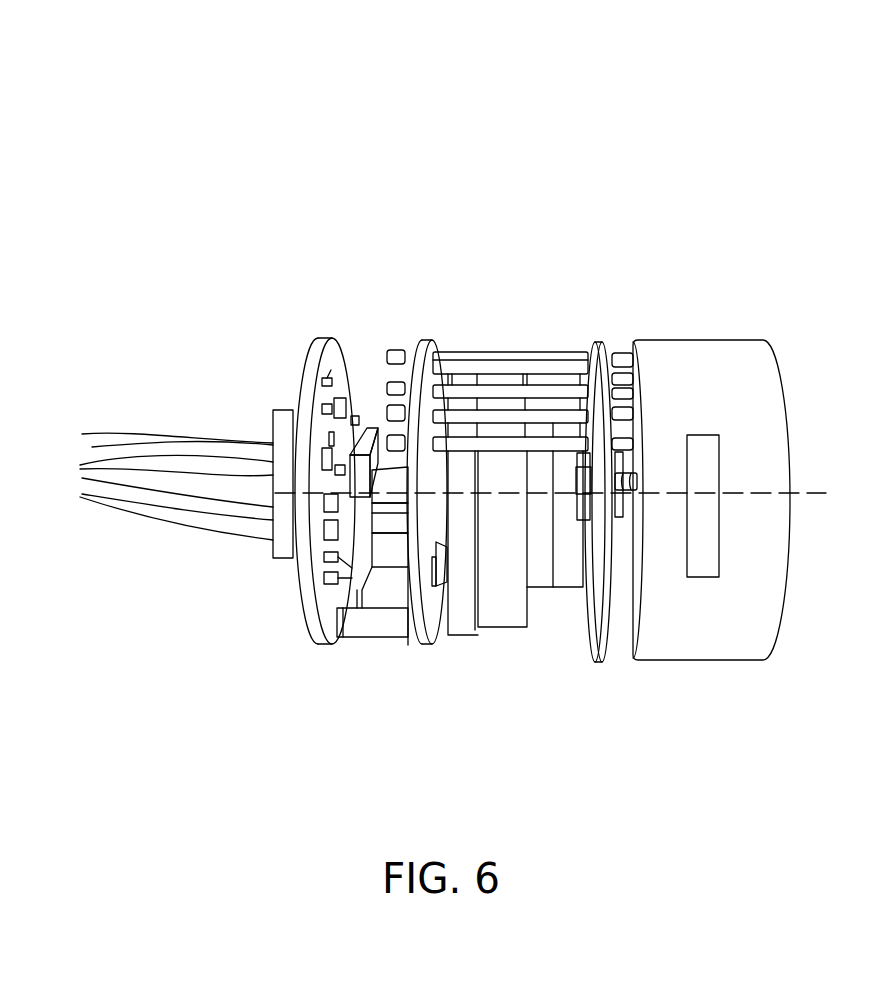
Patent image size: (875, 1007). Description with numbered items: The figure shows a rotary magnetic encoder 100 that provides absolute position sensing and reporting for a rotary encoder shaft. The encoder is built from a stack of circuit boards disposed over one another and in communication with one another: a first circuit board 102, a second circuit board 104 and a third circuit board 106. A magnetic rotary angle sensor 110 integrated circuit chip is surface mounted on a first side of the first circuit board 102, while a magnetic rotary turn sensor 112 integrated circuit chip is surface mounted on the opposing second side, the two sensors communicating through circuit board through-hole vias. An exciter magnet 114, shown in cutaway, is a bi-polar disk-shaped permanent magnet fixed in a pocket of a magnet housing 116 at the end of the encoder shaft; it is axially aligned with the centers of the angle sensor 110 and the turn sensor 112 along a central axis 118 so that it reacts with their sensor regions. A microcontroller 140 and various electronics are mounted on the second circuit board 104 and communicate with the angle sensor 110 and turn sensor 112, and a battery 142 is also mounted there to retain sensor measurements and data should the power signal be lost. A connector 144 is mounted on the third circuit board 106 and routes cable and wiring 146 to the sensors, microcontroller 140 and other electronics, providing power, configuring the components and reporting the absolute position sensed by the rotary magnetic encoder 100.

The rotary magnetic encoder 100 is at (525, 225).
The first circuit board 102 is at (605, 375).
The second circuit board 104 is at (428, 370).
The third circuit board 106 is at (315, 362).
The magnetic rotary angle sensor 110 is at (628, 498).
The magnetic rotary turn sensor 112 is at (572, 507).
The exciter magnet 114 is at (703, 523).
The magnet housing 116 is at (751, 551).
The central axis 118 is at (768, 493).
The microcontroller 140 is at (427, 565).
The battery 142 is at (507, 527).
The connector 144 is at (273, 537).
The cable and wiring 146 is at (160, 408).